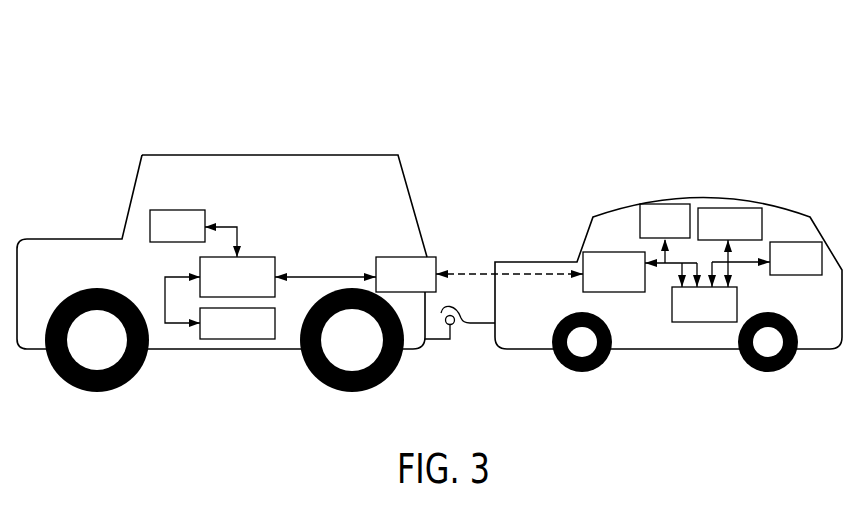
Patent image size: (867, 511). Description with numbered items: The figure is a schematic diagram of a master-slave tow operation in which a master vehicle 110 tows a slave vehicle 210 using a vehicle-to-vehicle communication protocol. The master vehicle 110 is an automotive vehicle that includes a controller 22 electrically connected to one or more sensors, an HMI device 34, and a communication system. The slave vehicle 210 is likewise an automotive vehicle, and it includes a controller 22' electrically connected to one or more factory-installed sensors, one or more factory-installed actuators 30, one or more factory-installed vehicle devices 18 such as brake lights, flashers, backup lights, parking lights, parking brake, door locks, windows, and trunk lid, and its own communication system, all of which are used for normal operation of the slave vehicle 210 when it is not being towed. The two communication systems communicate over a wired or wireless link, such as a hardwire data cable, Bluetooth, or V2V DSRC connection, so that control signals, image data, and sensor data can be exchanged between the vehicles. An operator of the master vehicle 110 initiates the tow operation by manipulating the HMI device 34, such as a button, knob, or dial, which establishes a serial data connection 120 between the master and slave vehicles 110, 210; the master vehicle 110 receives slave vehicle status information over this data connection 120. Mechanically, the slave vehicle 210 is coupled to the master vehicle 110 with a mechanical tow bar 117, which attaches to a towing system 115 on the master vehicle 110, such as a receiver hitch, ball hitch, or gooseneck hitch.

The master vehicle 110 is at (183, 113).
The slave vehicle 210 is at (768, 178).
The controller 22 is at (242, 251).
The controller 22' is at (678, 311).
The factory-installed actuators 30 is at (652, 204).
The HMI device 34 is at (206, 215).
The factory-installed vehicle devices 18 is at (818, 242).
The towing system 115 is at (442, 341).
The mechanical tow bar 117 is at (480, 325).
The serial data connection 120 is at (476, 268).